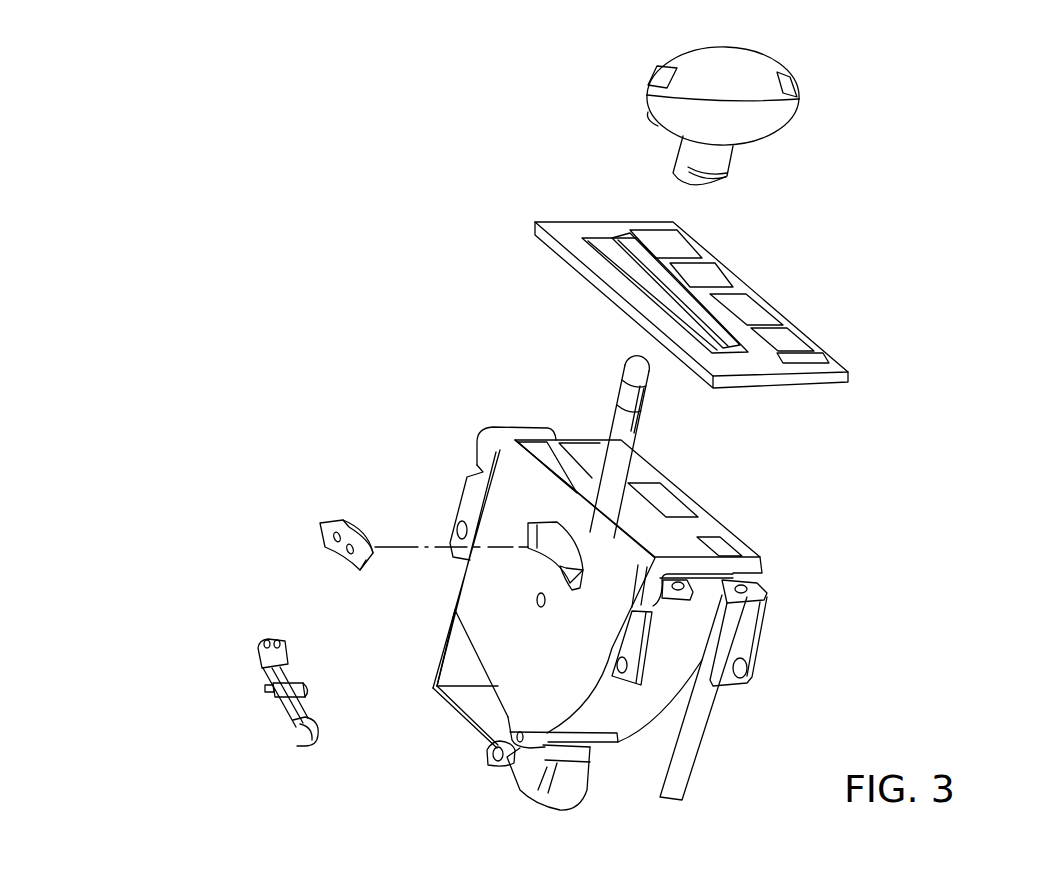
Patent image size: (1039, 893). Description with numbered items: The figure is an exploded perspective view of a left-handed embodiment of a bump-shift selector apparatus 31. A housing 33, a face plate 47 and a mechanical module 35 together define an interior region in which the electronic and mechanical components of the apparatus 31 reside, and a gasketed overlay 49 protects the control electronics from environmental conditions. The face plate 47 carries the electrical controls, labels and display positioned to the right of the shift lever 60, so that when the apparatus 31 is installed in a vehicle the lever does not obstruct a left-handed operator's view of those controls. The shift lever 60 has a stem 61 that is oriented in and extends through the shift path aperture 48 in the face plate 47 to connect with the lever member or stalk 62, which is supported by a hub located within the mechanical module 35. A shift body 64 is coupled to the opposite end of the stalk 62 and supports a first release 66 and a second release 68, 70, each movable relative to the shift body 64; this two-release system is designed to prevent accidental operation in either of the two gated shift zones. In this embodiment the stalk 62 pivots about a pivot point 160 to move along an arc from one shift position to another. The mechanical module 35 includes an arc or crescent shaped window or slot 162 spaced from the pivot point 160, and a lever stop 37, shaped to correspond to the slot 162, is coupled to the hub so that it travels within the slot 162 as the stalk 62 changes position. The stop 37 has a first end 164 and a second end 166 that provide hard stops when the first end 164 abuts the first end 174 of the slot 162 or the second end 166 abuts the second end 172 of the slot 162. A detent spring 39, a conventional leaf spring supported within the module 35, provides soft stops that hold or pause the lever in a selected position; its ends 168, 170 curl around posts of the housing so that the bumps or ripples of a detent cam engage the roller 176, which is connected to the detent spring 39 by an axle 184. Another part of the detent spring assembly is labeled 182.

The shift selector apparatus 31 is at (952, 104).
The housing 33 is at (767, 633).
The mechanical module 35 is at (480, 577).
The lever stop 37 is at (316, 518).
The detent spring 39 is at (254, 706).
The face plate 47 is at (820, 337).
The shift path aperture 48 is at (638, 278).
The gasketed overlay 49 is at (698, 507).
The shift lever 60 is at (797, 169).
The stem 61 is at (722, 183).
The lever member 62 is at (633, 447).
The shift body 64 is at (737, 62).
The first release 66 is at (653, 117).
The second release 68 is at (655, 70).
The second release 70 is at (798, 85).
The pivot point 160 is at (536, 603).
The window or slot 162 is at (575, 530).
The first end of stop 164 is at (325, 547).
The second end of stop 166 is at (355, 572).
The end of detent spring 168 is at (272, 639).
The end of detent spring 170 is at (297, 748).
The second end of slot 172 is at (580, 587).
The first end of slot 174 is at (517, 535).
The roller 176 is at (292, 688).
The leaf spring 182 is at (283, 712).
The axle 184 is at (265, 689).